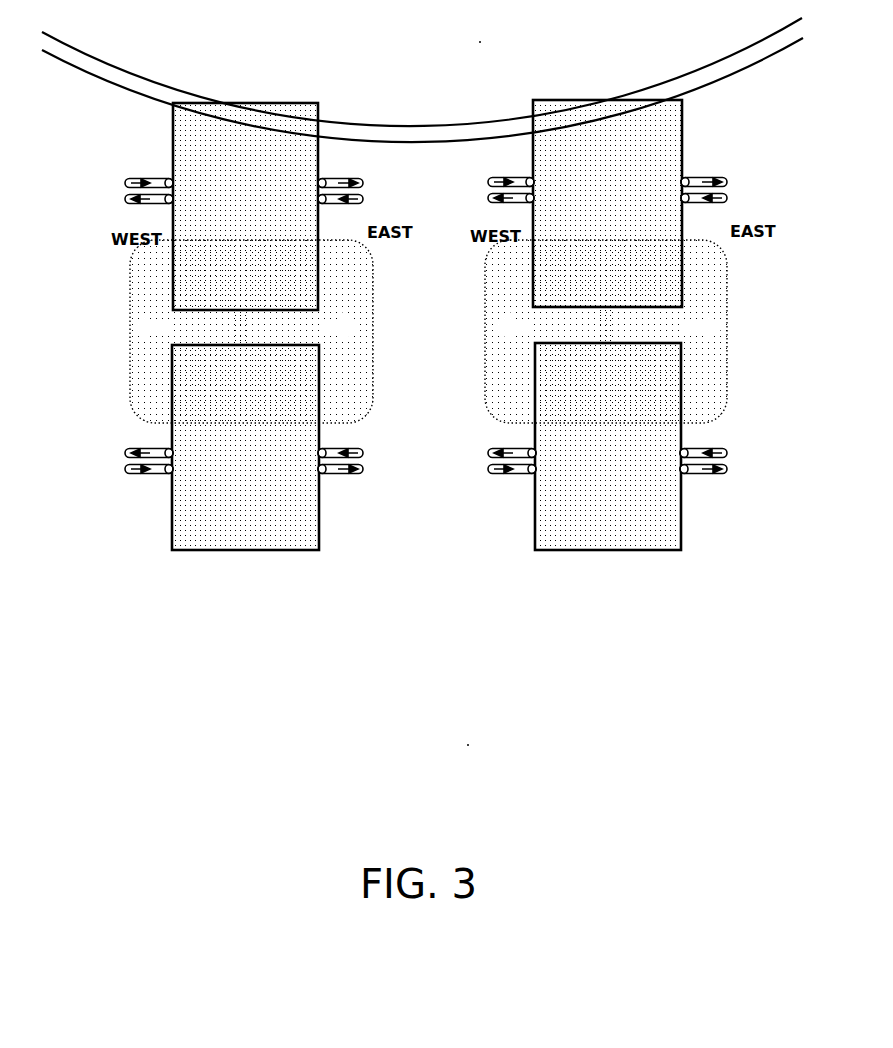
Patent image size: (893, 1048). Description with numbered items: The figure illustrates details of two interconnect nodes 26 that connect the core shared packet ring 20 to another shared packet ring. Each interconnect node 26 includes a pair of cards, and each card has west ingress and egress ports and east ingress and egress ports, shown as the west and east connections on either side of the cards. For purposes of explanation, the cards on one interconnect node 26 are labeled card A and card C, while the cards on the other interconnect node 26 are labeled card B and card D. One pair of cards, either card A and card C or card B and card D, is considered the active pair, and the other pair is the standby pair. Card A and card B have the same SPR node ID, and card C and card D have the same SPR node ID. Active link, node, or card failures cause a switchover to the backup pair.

The core shared packet ring 20 is at (106, 66).
The interconnect node 26 is at (128, 305).
The card A is at (245, 206).
The card B is at (607, 203).
The card C is at (245, 447).
The card D is at (608, 446).